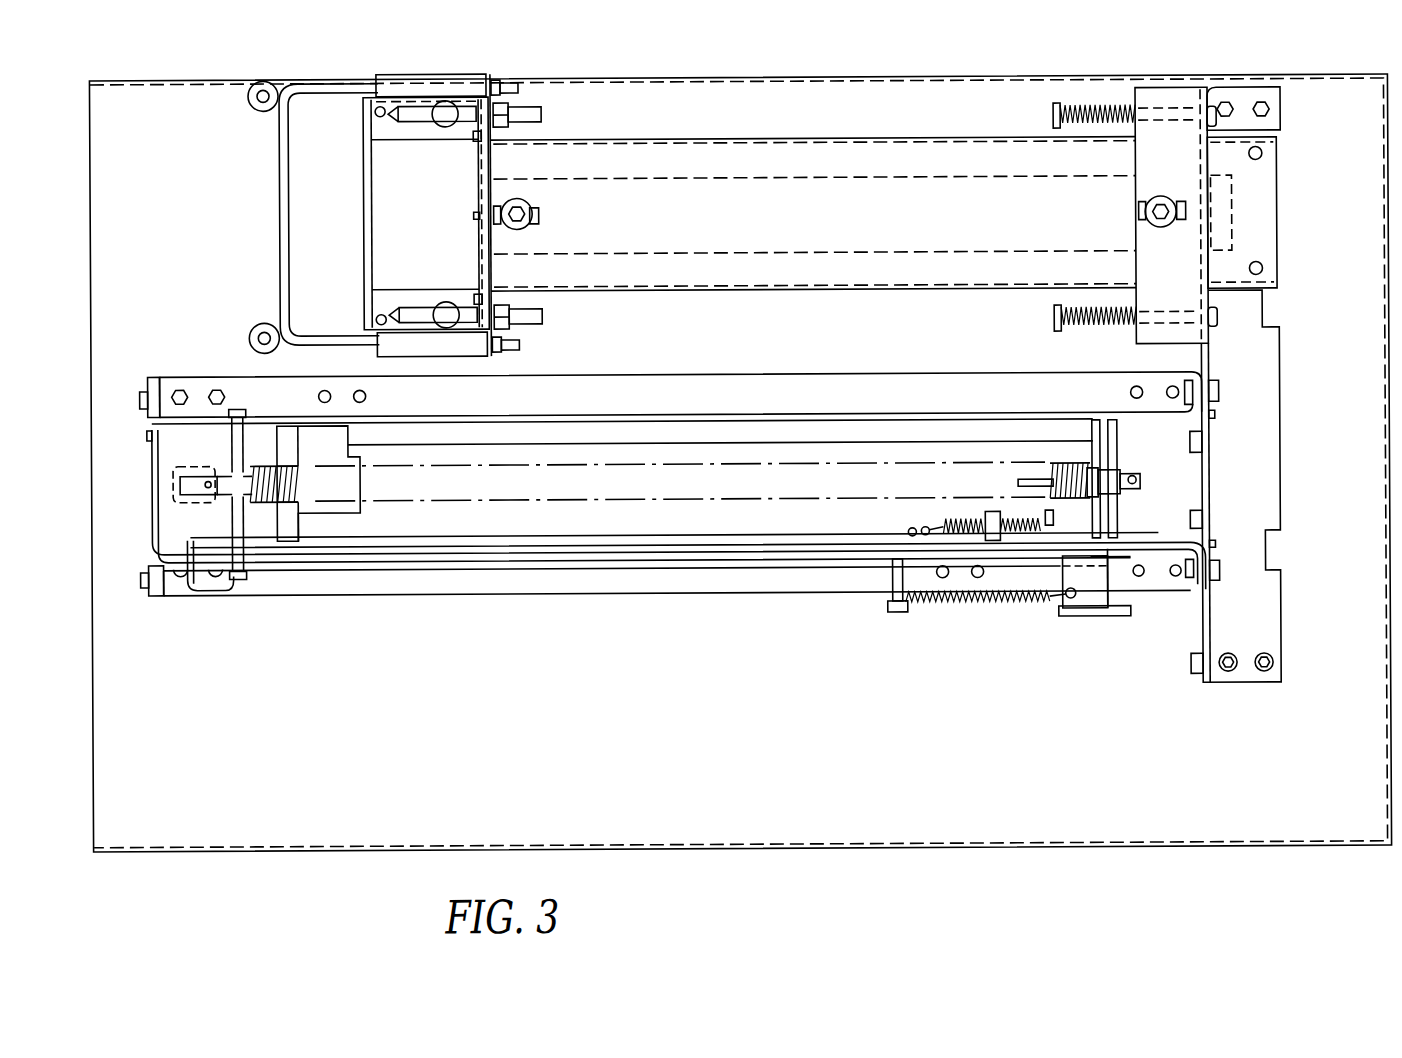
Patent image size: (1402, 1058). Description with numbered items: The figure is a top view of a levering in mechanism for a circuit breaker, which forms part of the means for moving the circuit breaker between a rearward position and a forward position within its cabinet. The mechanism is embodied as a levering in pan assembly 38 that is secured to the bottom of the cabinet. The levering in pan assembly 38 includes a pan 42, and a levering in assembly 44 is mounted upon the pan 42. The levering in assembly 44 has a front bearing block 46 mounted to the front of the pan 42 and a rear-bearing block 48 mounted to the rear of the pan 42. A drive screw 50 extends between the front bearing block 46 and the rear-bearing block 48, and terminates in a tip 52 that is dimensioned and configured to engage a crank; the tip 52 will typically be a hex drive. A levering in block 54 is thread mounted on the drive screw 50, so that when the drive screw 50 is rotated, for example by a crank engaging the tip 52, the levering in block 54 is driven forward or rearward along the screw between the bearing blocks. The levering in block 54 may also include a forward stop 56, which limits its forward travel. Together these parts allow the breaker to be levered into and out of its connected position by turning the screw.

The levering in pan assembly 38 is at (847, 853).
The pan 42 is at (897, 796).
The levering in assembly 44 is at (693, 399).
The front bearing block 46 is at (242, 410).
The rear-bearing block 48 is at (1103, 425).
The drive screw 50 is at (497, 483).
The tip 52 is at (172, 487).
The levering in block 54 is at (293, 520).
The forward stop 56 is at (267, 465).